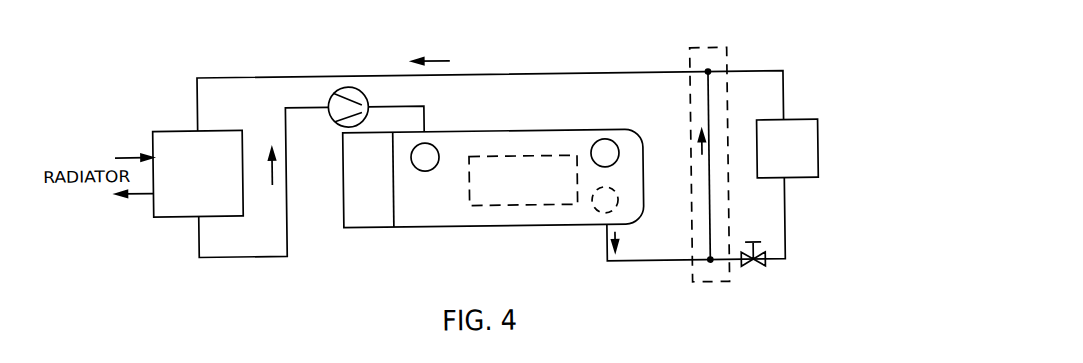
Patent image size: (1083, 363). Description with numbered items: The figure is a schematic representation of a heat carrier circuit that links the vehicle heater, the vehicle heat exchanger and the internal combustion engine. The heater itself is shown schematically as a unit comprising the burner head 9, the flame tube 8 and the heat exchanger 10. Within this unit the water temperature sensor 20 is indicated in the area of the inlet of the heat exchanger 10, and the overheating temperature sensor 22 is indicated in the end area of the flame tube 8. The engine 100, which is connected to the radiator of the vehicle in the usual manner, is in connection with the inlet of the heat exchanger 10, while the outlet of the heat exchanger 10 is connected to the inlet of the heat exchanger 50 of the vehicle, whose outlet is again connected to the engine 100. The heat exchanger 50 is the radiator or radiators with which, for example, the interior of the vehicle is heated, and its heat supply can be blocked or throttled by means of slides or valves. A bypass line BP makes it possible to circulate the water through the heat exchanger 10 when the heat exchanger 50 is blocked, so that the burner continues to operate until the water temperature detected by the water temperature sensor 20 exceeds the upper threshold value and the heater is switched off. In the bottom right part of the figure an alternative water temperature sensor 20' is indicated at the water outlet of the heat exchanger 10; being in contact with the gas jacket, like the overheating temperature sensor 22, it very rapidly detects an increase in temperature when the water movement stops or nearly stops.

The engine 100 is at (214, 202).
The heat exchanger 10 is at (584, 135).
The burner head 9 is at (356, 195).
The flame tube 8 is at (518, 194).
The water temperature sensor 20 is at (422, 180).
The overheating temperature sensor 22 is at (614, 148).
The water temperature sensor 20' is at (639, 209).
The heat exchanger 50 is at (804, 134).
The bypass line BP is at (712, 102).